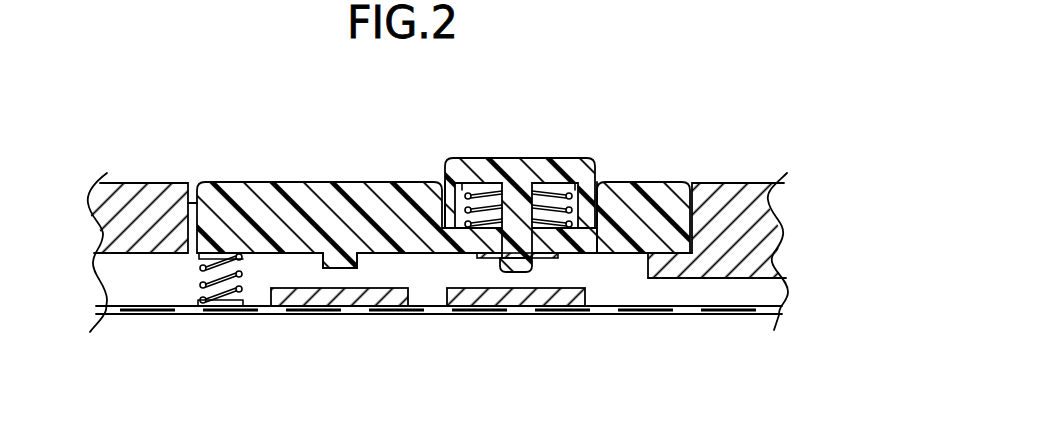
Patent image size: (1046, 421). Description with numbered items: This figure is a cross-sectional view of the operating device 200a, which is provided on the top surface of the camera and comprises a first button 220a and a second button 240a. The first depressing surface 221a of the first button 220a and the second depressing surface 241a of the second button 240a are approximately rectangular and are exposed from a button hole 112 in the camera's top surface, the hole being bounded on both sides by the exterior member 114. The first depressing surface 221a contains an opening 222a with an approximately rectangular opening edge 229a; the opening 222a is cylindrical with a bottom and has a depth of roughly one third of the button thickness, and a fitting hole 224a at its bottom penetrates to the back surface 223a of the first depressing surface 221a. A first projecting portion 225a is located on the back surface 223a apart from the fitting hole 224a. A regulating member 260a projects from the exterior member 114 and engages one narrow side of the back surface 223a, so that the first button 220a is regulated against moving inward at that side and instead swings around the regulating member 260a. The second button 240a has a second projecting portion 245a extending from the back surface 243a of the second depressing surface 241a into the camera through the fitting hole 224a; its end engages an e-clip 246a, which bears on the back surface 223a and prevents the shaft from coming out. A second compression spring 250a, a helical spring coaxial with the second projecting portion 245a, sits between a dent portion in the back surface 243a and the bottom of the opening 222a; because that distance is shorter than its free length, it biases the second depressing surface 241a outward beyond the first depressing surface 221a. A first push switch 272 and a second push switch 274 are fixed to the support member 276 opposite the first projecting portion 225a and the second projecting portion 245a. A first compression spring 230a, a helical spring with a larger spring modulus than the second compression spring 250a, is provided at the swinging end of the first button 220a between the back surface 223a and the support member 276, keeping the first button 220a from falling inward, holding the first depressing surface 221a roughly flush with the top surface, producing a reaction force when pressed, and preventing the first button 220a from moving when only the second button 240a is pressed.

The button hole 112 is at (203, 187).
The exterior member 114 is at (130, 187).
The operating device 200a is at (439, 224).
The first button 220a is at (443, 220).
The first depressing surface 221a is at (305, 182).
The opening 222a is at (595, 192).
The back surface 223a is at (418, 255).
The fitting hole 224a is at (531, 160).
The first projecting portion 225a is at (323, 268).
The opening edge 229a is at (605, 180).
The first compression spring 230a is at (223, 308).
The second button 240a is at (506, 224).
The second depressing surface 241a is at (497, 158).
The back surface 243a is at (441, 181).
The second projecting portion 245a is at (513, 272).
The e-clip 246a is at (547, 258).
The second compression spring 250a is at (476, 160).
The regulating member 260a is at (673, 270).
The first push switch 272 is at (367, 300).
The second push switch 274 is at (473, 293).
The support member 276 is at (138, 315).